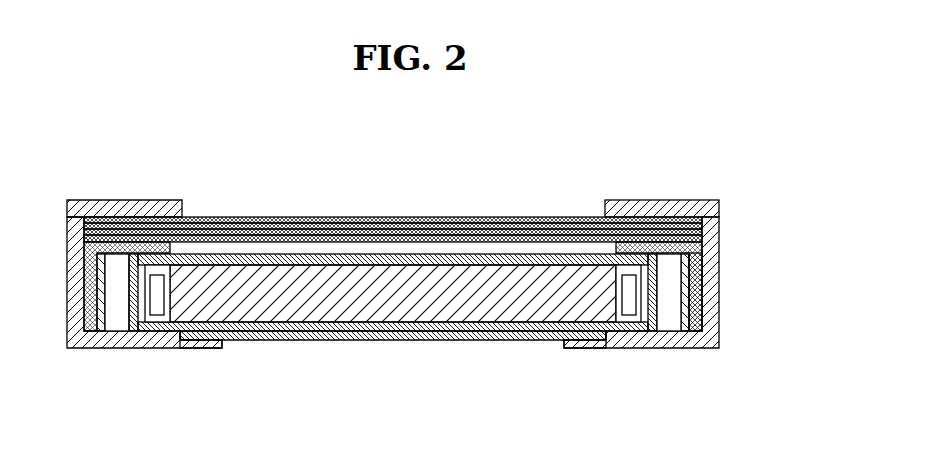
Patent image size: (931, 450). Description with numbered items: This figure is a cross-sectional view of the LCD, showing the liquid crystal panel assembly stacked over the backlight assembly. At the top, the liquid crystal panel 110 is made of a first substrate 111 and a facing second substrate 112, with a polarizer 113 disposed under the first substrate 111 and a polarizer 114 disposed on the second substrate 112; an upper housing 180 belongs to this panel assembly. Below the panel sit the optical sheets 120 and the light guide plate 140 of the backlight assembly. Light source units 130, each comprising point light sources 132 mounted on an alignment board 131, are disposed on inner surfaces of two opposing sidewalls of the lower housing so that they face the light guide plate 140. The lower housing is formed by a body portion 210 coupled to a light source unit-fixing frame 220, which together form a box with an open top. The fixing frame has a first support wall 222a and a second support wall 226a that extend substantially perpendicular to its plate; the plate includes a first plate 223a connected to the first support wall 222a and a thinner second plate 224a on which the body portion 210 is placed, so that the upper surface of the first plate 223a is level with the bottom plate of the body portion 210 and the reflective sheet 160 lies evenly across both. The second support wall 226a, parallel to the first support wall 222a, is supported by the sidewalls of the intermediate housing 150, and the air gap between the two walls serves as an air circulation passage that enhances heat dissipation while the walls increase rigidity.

The liquid crystal panel 110 is at (463, 267).
The first substrate 111 is at (719, 247).
The second substrate 112 is at (719, 232).
The polarizer 113 is at (438, 286).
The polarizer 114 is at (719, 219).
The optical sheets 120 is at (456, 268).
The light source units 130 is at (124, 166).
The alignment board 131 is at (122, 201).
The point light sources 132 is at (112, 143).
The light guide plate 140 is at (370, 258).
The intermediate housing 150 is at (719, 297).
The reflective sheet 160 is at (231, 342).
The upper housing 180 is at (719, 206).
The body portion 210 is at (309, 341).
The light source unit-fixing frame 220 is at (112, 350).
The first support wall 222a is at (653, 348).
The first plate 223a is at (628, 349).
The second plate 224a is at (582, 350).
The second support wall 226a is at (692, 348).